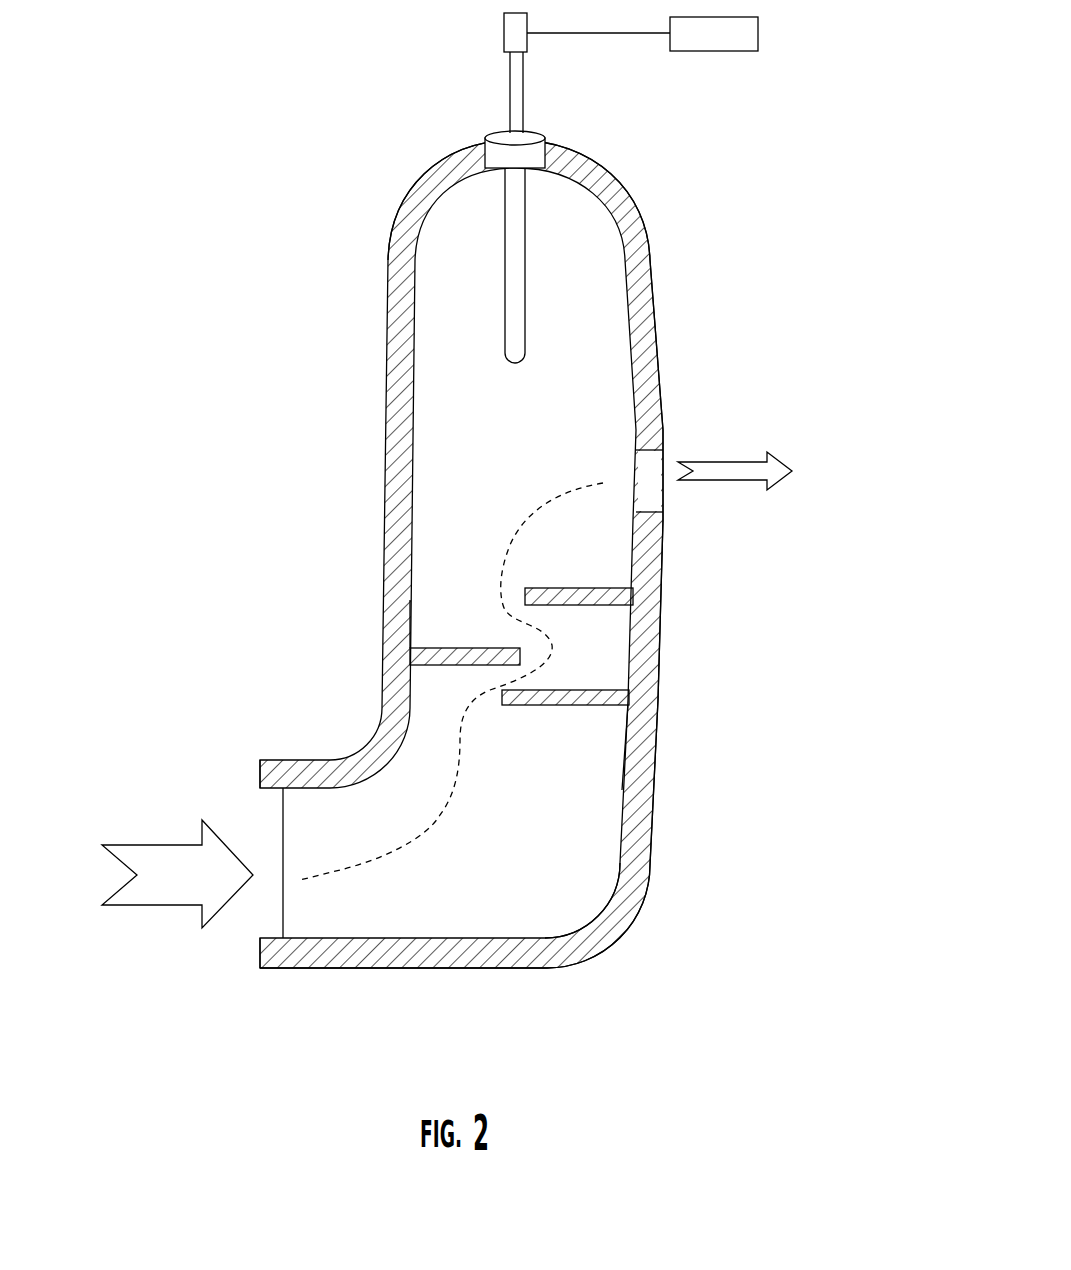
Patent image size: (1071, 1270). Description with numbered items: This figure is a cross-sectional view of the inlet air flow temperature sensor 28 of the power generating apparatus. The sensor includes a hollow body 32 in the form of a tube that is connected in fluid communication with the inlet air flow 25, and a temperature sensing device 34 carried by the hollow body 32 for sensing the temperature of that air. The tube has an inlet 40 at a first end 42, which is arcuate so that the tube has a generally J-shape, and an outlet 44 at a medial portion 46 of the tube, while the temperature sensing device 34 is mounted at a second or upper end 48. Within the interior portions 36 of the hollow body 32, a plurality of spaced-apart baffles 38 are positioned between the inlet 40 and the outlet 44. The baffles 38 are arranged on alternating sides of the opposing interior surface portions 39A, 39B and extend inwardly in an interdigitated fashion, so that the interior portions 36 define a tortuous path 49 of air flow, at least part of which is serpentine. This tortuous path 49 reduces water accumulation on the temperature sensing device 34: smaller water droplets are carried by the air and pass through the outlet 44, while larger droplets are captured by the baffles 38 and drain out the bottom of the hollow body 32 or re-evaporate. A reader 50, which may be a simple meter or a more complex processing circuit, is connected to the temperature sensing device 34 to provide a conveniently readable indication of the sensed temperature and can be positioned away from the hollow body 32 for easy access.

The inlet air flow 25 is at (177, 850).
The inlet air flow temperature sensor 28 is at (375, 86).
The hollow body 32 is at (642, 186).
The temperature sensing device 34 is at (523, 108).
The interior portions 36 is at (565, 840).
The baffles 38 is at (447, 667).
The interior surface portion 39A is at (410, 600).
The interior surface portion 39B is at (622, 788).
The inlet 40 is at (270, 882).
The first end 42 is at (507, 968).
The outlet 44 is at (652, 477).
The medial portion 46 is at (663, 365).
The second or upper end 48 is at (433, 158).
The tortuous path 49 is at (383, 843).
The reader 50 is at (727, 52).